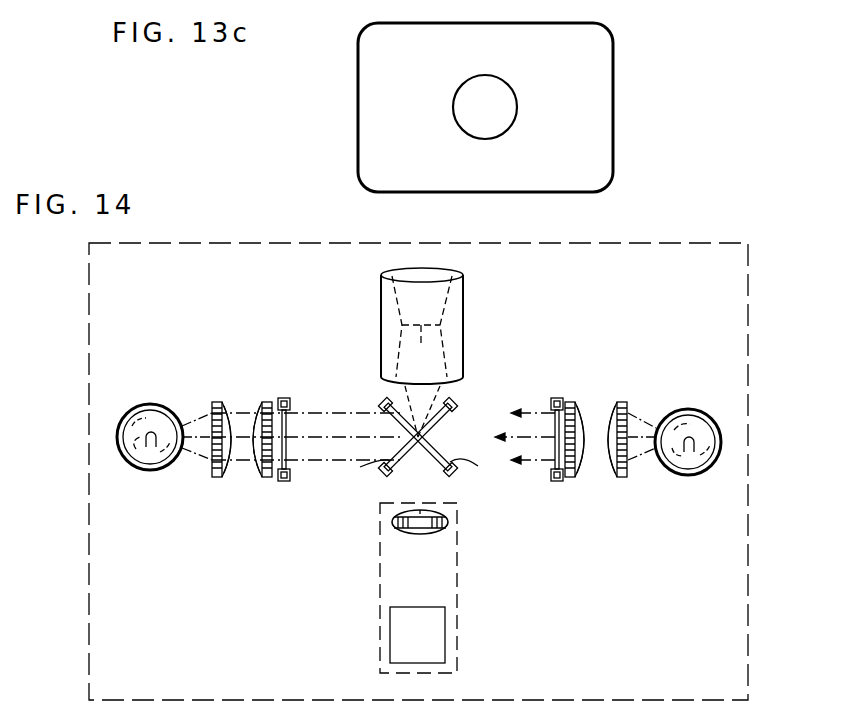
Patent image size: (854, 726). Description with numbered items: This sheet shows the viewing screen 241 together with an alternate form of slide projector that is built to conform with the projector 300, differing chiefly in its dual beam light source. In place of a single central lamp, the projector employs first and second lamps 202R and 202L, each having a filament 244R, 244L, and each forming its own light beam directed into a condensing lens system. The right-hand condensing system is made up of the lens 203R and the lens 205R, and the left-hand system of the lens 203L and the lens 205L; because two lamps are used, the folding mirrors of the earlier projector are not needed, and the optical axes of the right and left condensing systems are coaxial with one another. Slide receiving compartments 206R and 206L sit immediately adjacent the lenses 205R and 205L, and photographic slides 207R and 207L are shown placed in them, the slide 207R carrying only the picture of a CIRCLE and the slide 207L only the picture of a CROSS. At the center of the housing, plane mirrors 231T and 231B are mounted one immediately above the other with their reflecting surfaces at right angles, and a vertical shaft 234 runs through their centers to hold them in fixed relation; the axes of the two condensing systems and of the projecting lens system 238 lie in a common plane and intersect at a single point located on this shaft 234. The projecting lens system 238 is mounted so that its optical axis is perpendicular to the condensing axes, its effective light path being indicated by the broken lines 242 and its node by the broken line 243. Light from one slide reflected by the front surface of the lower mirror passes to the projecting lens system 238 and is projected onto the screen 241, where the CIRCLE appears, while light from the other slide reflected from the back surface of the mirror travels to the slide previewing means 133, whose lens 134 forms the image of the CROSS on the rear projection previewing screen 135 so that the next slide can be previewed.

In FIG. 13C, the screen 241 is at (380, 92).
In FIG. 14, the slide projector 300 is at (230, 233).
In FIG. 14, the left lamp 202L is at (141, 448).
In FIG. 14, the right lamp 202R is at (697, 449).
In FIG. 14, the filament 244L is at (151, 470).
In FIG. 14, the filament 244R is at (704, 454).
In FIG. 14, the lens 203L is at (218, 478).
In FIG. 14, the lens 203R is at (622, 478).
In FIG. 14, the lens 205L is at (266, 478).
In FIG. 14, the lens 205R is at (576, 478).
In FIG. 14, the slide receiving compartment 206L is at (284, 398).
In FIG. 14, the slide receiving compartment 206R is at (561, 398).
In FIG. 14, the photographic slide 207L is at (286, 430).
In FIG. 14, the photographic slide 207R is at (553, 430).
In FIG. 14, the projecting lens system 238 is at (446, 326).
In FIG. 14, the effective light path 242 is at (386, 300).
In FIG. 14, the node of the lens system 243 is at (464, 329).
In FIG. 14, the shaft 234 is at (418, 434).
In FIG. 14, the plane mirror 231T is at (386, 464).
In FIG. 14, the plane mirror 231B is at (452, 463).
In FIG. 14, the slide previewing means 133 is at (387, 588).
In FIG. 14, the lens 134 is at (433, 534).
In FIG. 14, the rear projection previewing screen 135 is at (417, 618).